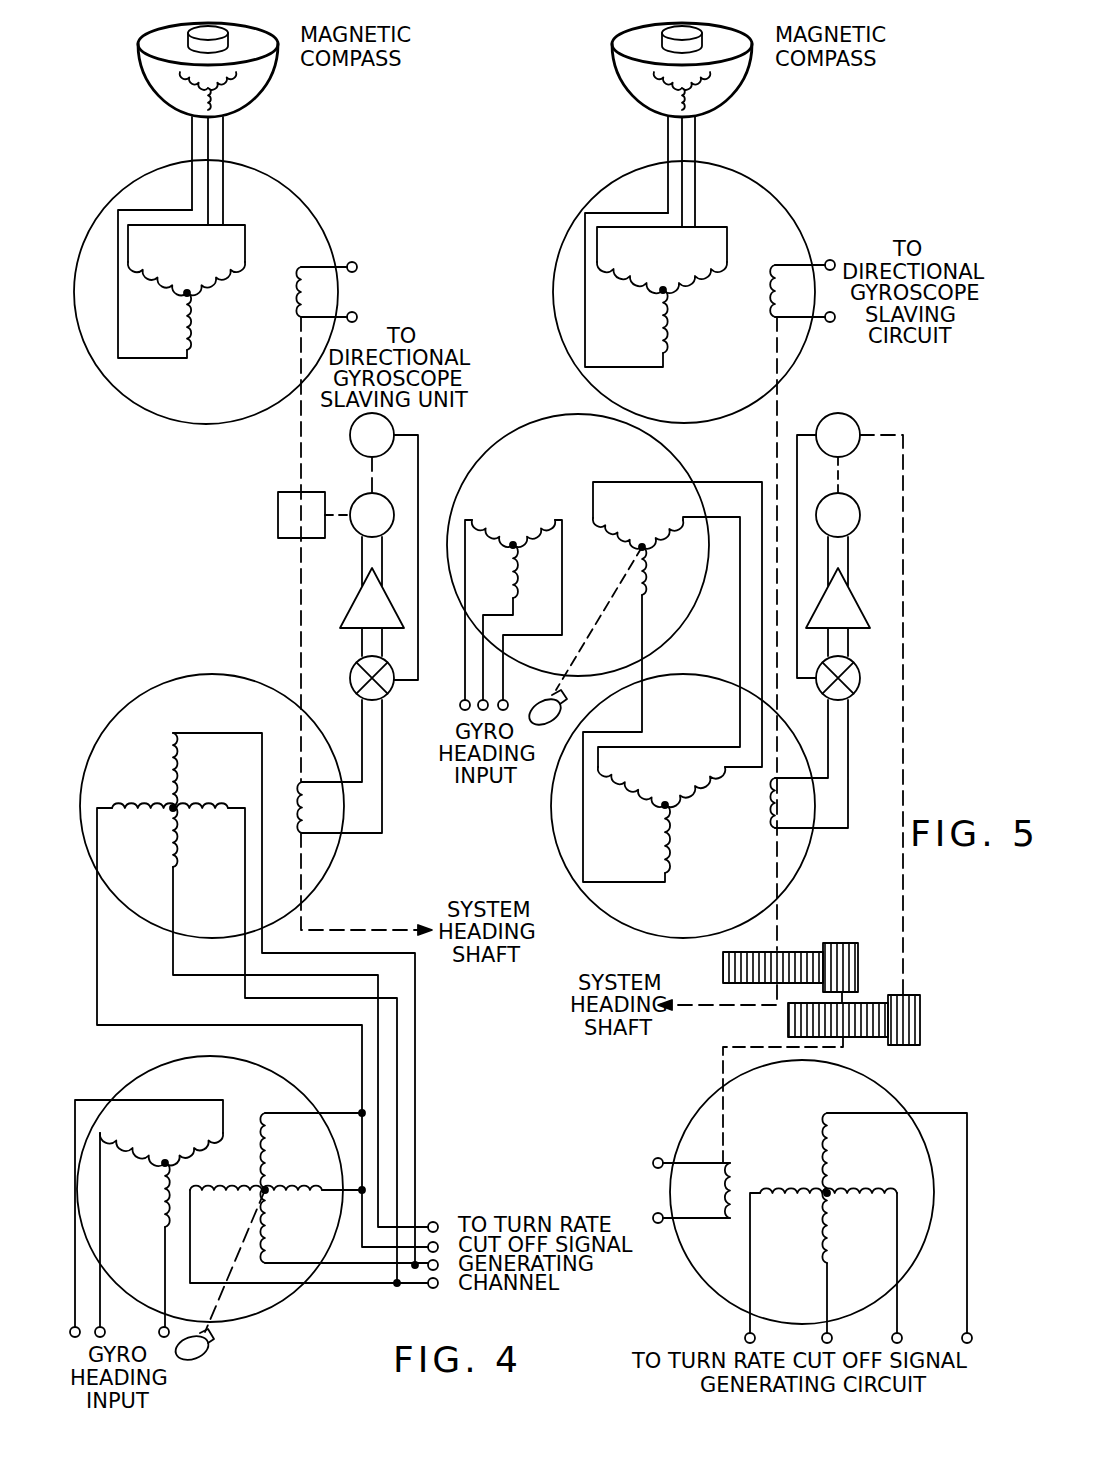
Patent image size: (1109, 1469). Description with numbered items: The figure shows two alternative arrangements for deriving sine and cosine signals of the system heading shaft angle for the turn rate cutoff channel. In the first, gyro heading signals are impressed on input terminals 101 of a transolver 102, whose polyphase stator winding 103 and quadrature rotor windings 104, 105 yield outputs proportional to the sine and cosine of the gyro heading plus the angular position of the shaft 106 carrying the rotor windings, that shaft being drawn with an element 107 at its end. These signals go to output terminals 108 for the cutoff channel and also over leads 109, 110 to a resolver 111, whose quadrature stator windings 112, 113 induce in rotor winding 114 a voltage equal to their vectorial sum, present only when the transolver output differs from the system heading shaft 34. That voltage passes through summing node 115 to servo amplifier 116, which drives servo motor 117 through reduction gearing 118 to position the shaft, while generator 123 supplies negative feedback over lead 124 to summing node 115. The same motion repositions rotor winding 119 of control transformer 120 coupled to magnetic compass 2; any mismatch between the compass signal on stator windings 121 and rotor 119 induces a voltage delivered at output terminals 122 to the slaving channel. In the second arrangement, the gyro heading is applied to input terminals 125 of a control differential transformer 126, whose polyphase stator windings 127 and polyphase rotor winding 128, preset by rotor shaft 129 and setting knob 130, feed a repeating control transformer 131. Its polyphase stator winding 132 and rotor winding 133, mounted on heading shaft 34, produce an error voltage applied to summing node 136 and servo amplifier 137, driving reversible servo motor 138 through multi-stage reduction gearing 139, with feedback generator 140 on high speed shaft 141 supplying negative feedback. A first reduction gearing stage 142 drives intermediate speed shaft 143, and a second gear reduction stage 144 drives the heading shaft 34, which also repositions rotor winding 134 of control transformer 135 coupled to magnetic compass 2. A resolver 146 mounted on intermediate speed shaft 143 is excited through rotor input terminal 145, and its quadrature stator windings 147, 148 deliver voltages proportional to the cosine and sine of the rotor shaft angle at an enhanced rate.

In FIG. 4, the magnetic compass 2 is at (114, 91).
In FIG. 5, the magnetic compass 2 is at (682, 125).
In FIG. 4, the system heading shaft 34 is at (300, 572).
In FIG. 5, the system heading shaft 34 is at (779, 410).
In FIG. 4, the input terminals 101 is at (158, 1329).
In FIG. 4, the transolver 102 is at (292, 1078).
In FIG. 4, the polyphase stator winding 103 is at (138, 1142).
In FIG. 4, the rotor winding 104 is at (266, 1168).
In FIG. 4, the rotor winding 105 is at (272, 1195).
In FIG. 4, the shaft 106 is at (222, 1270).
In FIG. 4, the adjusting knob 107 is at (213, 1350).
In FIG. 4, the output terminals 108 is at (440, 1225).
In FIG. 4, the lead 109 is at (362, 1075).
In FIG. 4, the lead 110 is at (415, 1104).
In FIG. 4, the resolver 111 is at (155, 686).
In FIG. 4, the quadrature stator winding 112 is at (172, 780).
In FIG. 4, the quadrature stator winding 113 is at (218, 812).
In FIG. 4, the rotor winding 114 is at (300, 783).
In FIG. 4, the summing node 115 is at (404, 686).
In FIG. 4, the servo amplifier 116 is at (352, 628).
In FIG. 4, the servo motor 117 is at (355, 497).
In FIG. 4, the reduction gearing 118 is at (278, 505).
In FIG. 4, the rotor winding 119 is at (295, 310).
In FIG. 4, the control transformer 120 is at (312, 213).
In FIG. 4, the stator windings 121 is at (204, 260).
In FIG. 4, the output terminals 122 is at (358, 315).
In FIG. 4, the generator 123 is at (392, 428).
In FIG. 4, the lead 124 is at (418, 478).
In FIG. 4, the input terminals 125 is at (462, 711).
In FIG. 4, the control differential transformer 126 is at (697, 476).
In FIG. 4, the polyphase stator windings 127 is at (478, 522).
In FIG. 4, the polyphase rotor winding 128 is at (648, 548).
In FIG. 4, the rotor shaft 129 is at (595, 632).
In FIG. 4, the setting knob 130 is at (562, 705).
In FIG. 5, the repeating control transformer 131 is at (706, 676).
In FIG. 5, the polyphase stator winding 132 is at (660, 806).
In FIG. 5, the rotor winding 133 is at (775, 812).
In FIG. 5, the rotor winding 134 is at (775, 310).
In FIG. 5, the control transformer 135 is at (783, 209).
In FIG. 5, the summing node 136 is at (857, 665).
In FIG. 5, the servo amplifier 137 is at (856, 586).
In FIG. 5, the reversible servo motor 138 is at (856, 495).
In FIG. 5, the multi-stage reduction gearing 139 is at (860, 919).
In FIG. 5, the feedback generator 140 is at (856, 430).
In FIG. 5, the high speed shaft 141 is at (905, 585).
In FIG. 5, the first reduction gearing stage 142 is at (922, 1010).
In FIG. 5, the intermediate speed shaft 143 is at (850, 1050).
In FIG. 5, the second gear reduction stage 144 is at (722, 968).
In FIG. 5, the rotor input terminal 145 is at (653, 1215).
In FIG. 5, the resolver 146 is at (905, 1104).
In FIG. 5, the quadrature stator winding 147 is at (846, 1192).
In FIG. 5, the quadrature stator winding 148 is at (832, 1235).